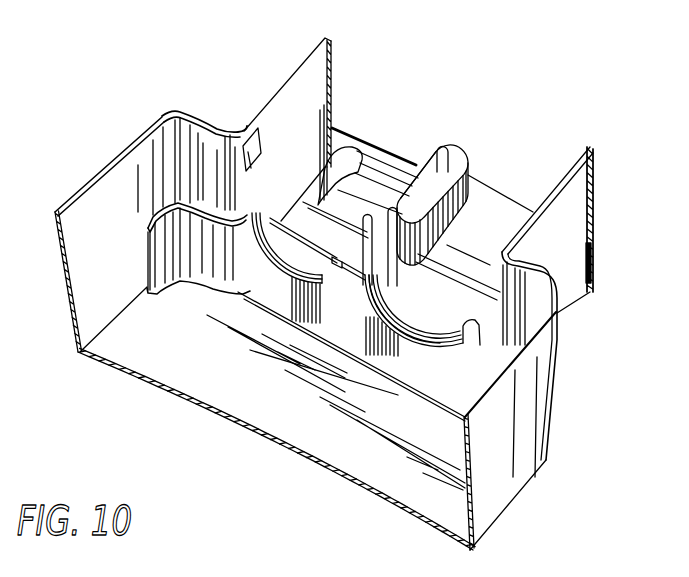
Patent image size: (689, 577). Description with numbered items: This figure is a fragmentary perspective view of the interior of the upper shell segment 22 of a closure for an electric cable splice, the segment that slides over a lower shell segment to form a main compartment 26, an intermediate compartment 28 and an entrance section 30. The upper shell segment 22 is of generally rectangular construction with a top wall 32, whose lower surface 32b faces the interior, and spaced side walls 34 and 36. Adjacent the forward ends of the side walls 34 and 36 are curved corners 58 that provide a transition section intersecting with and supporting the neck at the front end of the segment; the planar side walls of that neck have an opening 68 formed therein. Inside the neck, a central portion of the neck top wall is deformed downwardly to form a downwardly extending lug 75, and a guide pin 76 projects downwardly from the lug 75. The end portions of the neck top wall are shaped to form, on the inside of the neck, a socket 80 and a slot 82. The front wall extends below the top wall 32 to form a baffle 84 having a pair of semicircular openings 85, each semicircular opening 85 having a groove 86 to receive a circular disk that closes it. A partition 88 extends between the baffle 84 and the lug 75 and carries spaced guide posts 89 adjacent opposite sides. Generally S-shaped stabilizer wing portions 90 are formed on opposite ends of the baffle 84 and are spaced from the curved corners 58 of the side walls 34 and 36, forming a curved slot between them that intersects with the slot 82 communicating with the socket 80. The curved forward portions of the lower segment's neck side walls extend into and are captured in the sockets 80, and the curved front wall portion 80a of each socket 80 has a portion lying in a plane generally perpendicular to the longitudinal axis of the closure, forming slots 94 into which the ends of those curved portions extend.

The upper shell segment 22 is at (143, 106).
The main compartment 26 is at (146, 354).
The intermediate compartment 28 is at (532, 314).
The entrance section 30 is at (545, 179).
The top wall 32 is at (245, 432).
The lower surface of top wall 32b is at (202, 380).
The side wall 34 is at (487, 510).
The side wall 36 is at (107, 190).
The curved corner 58 is at (172, 104).
The opening 68 is at (250, 142).
The lug 75 is at (461, 172).
The guide pin 76 is at (447, 148).
The socket 80 is at (335, 128).
The curved front wall portion of socket 80a is at (343, 152).
The slot 82 is at (299, 200).
The baffle 84 is at (268, 288).
The semicircular opening 85 is at (396, 311).
The groove 86 is at (420, 340).
The partition 88 is at (364, 297).
The guide post 89 is at (393, 203).
The stabilizer wing portion 90 is at (193, 281).
The slot 94 is at (601, 258).